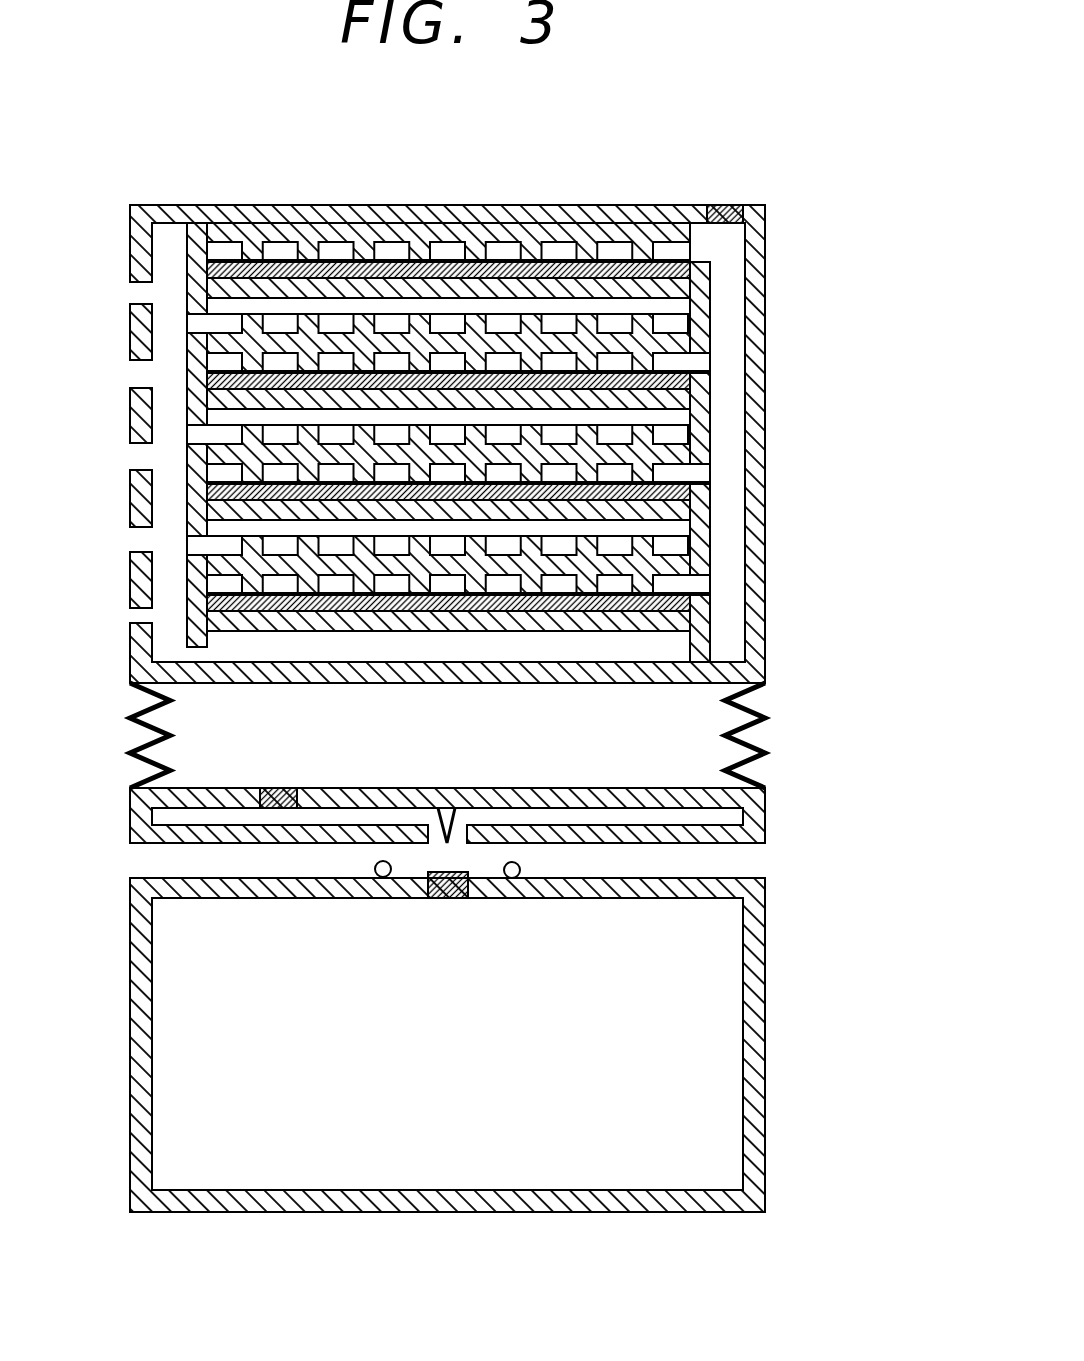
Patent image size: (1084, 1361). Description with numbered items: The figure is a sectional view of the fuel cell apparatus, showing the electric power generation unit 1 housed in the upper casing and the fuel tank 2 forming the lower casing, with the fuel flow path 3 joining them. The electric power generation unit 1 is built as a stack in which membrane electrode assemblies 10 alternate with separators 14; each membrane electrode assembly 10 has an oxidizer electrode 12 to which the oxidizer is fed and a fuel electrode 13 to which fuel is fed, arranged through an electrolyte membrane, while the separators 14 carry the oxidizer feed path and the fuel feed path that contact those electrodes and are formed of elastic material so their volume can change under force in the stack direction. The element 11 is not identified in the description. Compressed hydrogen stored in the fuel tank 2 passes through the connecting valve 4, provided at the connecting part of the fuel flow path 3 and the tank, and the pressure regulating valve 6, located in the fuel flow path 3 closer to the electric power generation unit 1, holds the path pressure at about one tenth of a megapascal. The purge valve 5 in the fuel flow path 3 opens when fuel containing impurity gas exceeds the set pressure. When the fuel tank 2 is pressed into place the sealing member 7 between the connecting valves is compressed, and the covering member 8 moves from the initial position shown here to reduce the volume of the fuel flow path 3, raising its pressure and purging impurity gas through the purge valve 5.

The electric power generation unit 1 is at (467, 207).
The fuel tank 2 is at (453, 1212).
The fuel flow path 3 is at (680, 730).
The connecting valve 4 is at (450, 857).
The purge valve 5 is at (725, 207).
The pressure regulating valve 6 is at (275, 808).
The sealing member 7 is at (520, 868).
The covering member 8 is at (707, 837).
The membrane electrode assembly 10 is at (567, 442).
The first layer 11 is at (678, 398).
The oxidizer electrode 12 is at (677, 418).
The fuel electrode 13 is at (678, 398).
The separator 14 is at (640, 342).